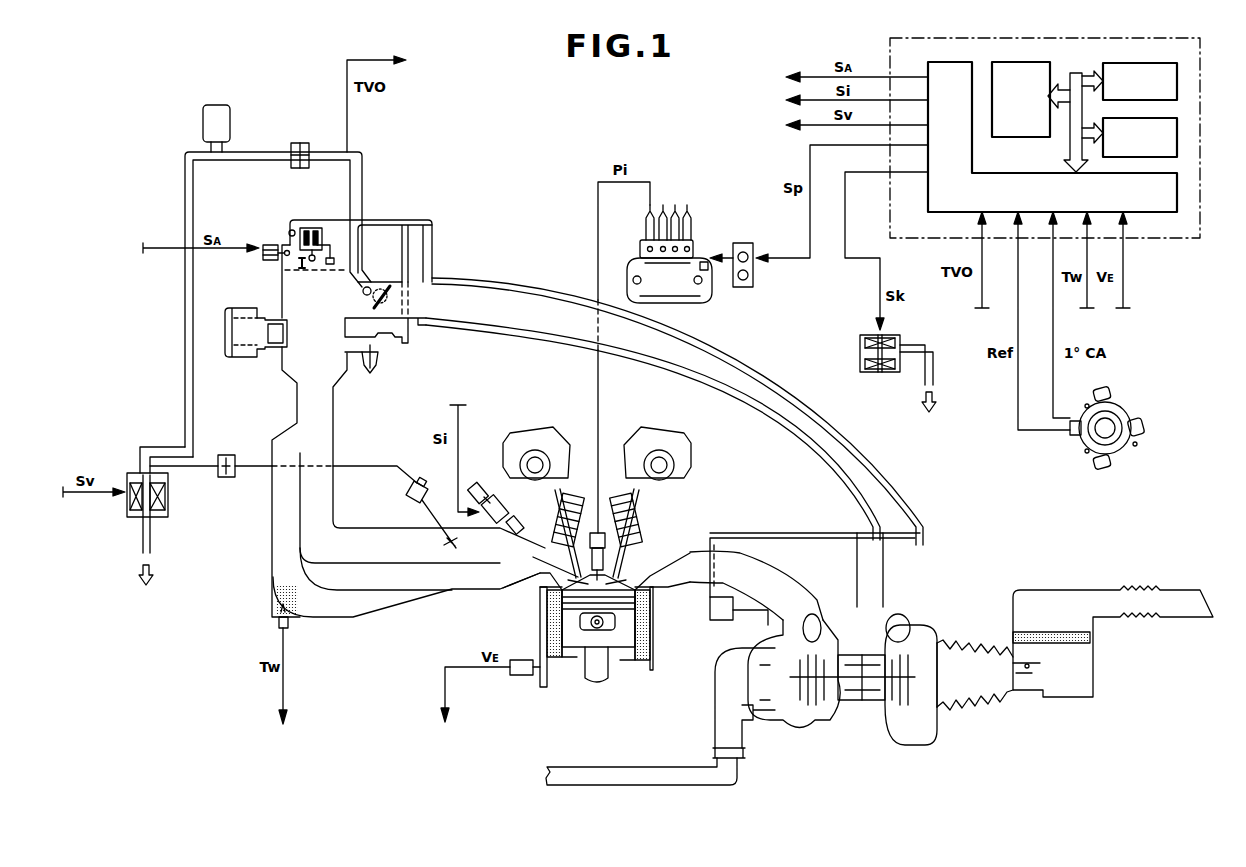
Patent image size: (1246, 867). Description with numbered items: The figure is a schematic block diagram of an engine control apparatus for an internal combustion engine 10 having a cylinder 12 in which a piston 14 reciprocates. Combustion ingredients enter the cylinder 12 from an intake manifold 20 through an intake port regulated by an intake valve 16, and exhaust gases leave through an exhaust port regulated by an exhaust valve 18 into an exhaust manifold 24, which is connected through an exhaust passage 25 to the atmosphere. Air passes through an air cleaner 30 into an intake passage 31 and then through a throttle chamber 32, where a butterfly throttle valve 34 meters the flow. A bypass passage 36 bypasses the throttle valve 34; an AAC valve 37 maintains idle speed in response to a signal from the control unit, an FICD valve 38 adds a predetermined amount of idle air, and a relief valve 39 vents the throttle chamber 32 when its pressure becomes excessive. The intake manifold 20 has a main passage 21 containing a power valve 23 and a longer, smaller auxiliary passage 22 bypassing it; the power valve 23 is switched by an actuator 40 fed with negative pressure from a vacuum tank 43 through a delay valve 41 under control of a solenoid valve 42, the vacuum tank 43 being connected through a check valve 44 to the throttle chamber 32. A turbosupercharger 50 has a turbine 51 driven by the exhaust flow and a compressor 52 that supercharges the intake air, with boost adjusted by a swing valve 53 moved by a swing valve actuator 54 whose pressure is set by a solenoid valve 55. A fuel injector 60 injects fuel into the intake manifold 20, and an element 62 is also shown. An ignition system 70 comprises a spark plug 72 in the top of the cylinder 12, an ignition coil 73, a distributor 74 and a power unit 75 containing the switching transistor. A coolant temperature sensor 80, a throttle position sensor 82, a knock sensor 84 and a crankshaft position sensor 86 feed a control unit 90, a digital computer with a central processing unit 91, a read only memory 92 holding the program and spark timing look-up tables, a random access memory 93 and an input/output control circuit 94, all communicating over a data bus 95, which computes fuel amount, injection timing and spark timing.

The internal combustion engine 10 is at (510, 422).
The combustion chamber or cylinder 12 is at (618, 665).
The piston 14 is at (573, 650).
The intake valve 16 is at (560, 566).
The exhaust valve 18 is at (635, 570).
The intake manifold 20 is at (382, 628).
The main passage 21 is at (352, 533).
The auxiliary passage 22 is at (410, 608).
The power valve 23 is at (460, 548).
The exhaust manifold 24 is at (692, 548).
The exhaust passage 25 is at (703, 693).
The air cleaner 30 is at (1045, 590).
The intake passage 31 is at (942, 624).
The throttle chamber 32 is at (290, 291).
The butterfly throttle valve 34 is at (386, 285).
The bypass passage 36 is at (290, 232).
The AAC valve 37 is at (268, 245).
The FICD valve 38 is at (311, 228).
The relief valve 39 is at (246, 357).
The actuator 40 is at (418, 480).
The delay valve 41 is at (228, 478).
The solenoid valve 42 is at (168, 503).
The vacuum tank 43 is at (225, 105).
The check valve 44 is at (300, 143).
The turbosupercharger 50 is at (848, 671).
The turbine 51 is at (815, 618).
The compressor 52 is at (908, 618).
The swing valve 53 is at (768, 645).
The swing valve actuator 54 is at (710, 618).
The solenoid valve 55 is at (860, 352).
The fuel injector 60 is at (490, 493).
The fuel injector 62 is at (380, 358).
The ignition system 70 is at (682, 196).
The spark plug 72 is at (596, 530).
The ignition coil 73 is at (640, 252).
The distributor 74 is at (712, 298).
The power unit 75 is at (756, 278).
The cylinder-head coolant temperature sensor 80 is at (276, 623).
The throttle position sensor 82 is at (364, 292).
The knock sensor 84 is at (525, 659).
The crankshaft position sensor 86 is at (1128, 406).
The control unit 90 is at (891, 56).
The central processing unit 91 is at (1002, 137).
The read only memory 92 is at (1148, 63).
The random access memory 93 is at (1178, 138).
The input/output control circuit 94 is at (1142, 212).
The data bus 95 is at (1076, 74).